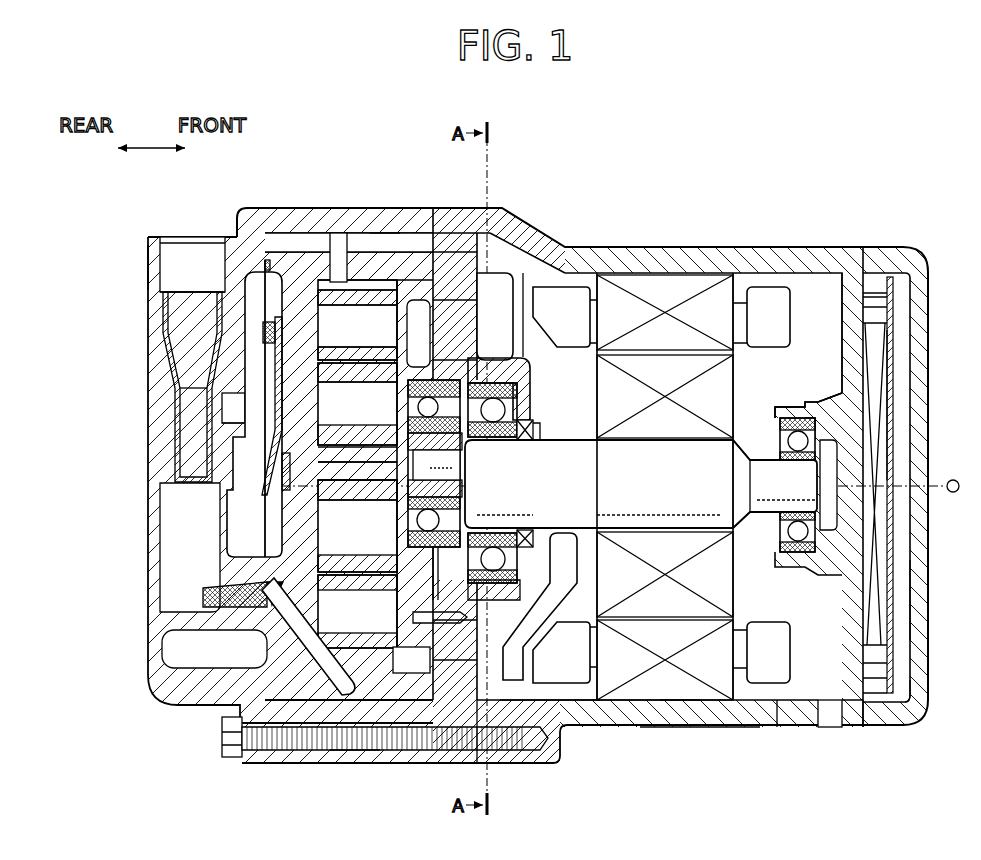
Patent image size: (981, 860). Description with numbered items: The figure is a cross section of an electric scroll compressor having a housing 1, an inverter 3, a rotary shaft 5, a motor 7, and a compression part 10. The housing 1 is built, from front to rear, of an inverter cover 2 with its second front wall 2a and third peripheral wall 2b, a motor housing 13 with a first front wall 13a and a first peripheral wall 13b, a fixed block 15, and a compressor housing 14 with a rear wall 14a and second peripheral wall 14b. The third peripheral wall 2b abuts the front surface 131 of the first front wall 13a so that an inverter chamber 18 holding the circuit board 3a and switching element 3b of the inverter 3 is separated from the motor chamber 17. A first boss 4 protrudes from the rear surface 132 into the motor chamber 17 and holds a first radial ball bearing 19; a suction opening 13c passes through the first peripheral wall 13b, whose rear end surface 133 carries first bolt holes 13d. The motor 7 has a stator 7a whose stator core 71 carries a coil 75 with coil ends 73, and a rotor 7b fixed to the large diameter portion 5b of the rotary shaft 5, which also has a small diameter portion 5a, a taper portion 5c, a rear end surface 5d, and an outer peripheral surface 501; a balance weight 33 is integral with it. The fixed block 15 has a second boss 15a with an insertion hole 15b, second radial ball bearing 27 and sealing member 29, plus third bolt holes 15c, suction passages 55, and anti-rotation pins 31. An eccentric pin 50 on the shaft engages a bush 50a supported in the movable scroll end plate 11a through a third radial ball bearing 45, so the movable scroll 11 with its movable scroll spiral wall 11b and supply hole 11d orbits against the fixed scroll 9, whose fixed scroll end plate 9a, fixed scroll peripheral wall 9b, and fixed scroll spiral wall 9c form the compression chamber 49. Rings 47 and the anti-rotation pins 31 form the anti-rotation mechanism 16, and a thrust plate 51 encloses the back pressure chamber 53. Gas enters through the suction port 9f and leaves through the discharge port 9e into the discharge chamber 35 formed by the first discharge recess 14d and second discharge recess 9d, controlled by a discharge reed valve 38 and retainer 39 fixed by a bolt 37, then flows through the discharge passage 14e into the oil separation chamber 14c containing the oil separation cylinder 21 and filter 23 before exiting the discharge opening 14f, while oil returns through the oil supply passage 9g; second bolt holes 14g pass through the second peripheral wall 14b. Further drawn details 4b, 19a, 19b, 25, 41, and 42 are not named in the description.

The housing 1 is at (272, 205).
The inverter cover 2 is at (931, 641).
The second front wall 2a is at (920, 600).
The third peripheral wall 2b is at (884, 247).
The inverter 3 is at (903, 300).
The circuit board 3a is at (895, 342).
The switching element 3b is at (896, 420).
The first boss 4 is at (788, 610).
The bearing holder portion 4b is at (822, 398).
The rotary shaft 5 is at (603, 438).
The small diameter portion 5a is at (747, 458).
The large diameter portion 5b is at (660, 440).
The taper portion 5c is at (745, 463).
The rear end surface 5d is at (455, 540).
The motor 7 is at (661, 527).
The stator 7a is at (642, 722).
The rotor 7b is at (735, 382).
The fixed scroll 9 is at (305, 250).
The fixed scroll end plate 9a is at (222, 312).
The fixed scroll peripheral wall 9b is at (380, 232).
The fixed scroll spiral wall 9c is at (335, 350).
The second discharge recess 9d is at (253, 275).
The discharge port 9e is at (325, 468).
The suction port 9f is at (338, 260).
The oil supply passage 9g is at (308, 620).
The compression part 10 is at (272, 752).
The movable scroll 11 is at (403, 262).
The movable scroll end plate 11a is at (395, 415).
The movable scroll spiral wall 11b is at (370, 350).
The supply hole 11d is at (338, 475).
The motor housing 13 is at (785, 246).
The first front wall 13a is at (840, 300).
The first peripheral wall 13b is at (710, 728).
The suction opening 13c is at (779, 728).
The first bolt holes 13d is at (520, 745).
The compressor housing 14 is at (146, 630).
The rear wall 14a is at (148, 262).
The second peripheral wall 14b is at (322, 764).
The oil separation chamber 14c is at (178, 513).
The first discharge recess 14d is at (232, 475).
The discharge passage 14e is at (228, 412).
The discharge opening 14f is at (173, 240).
The second bolt holes 14g is at (350, 750).
The fixed block 15 is at (468, 212).
The second boss 15a is at (495, 352).
The insertion hole 15b is at (540, 447).
The third bolt holes 15c is at (470, 735).
The anti-rotation mechanism 16 is at (408, 612).
The motor chamber 17 is at (558, 381).
The inverter chamber 18 is at (907, 690).
The first radial ball bearing 19 is at (781, 486).
The bearing 19a is at (805, 560).
The washer 19b is at (817, 535).
The oil separation cylinder 21 is at (188, 347).
The filter 23 is at (205, 597).
The bolt head 25 is at (222, 738).
The second radial ball bearing 27 is at (525, 383).
The sealing member 29 is at (538, 542).
The anti-rotation pins 31 is at (432, 632).
The balance weight 33 is at (560, 583).
The discharge chamber 35 is at (232, 538).
The bolt 37 is at (276, 332).
The discharge reed valve 38 is at (290, 458).
The retainer 39 is at (282, 430).
The step 41 is at (785, 406).
The retainer 42 is at (815, 440).
The third radial ball bearing 45 is at (448, 360).
The rings 47 is at (422, 728).
The compression chamber 49 is at (352, 539).
The eccentric pin 50 is at (447, 468).
The bush 50a is at (465, 482).
The thrust plate 51 is at (440, 310).
The back pressure chamber 53 is at (498, 375).
The suction passages 55 is at (449, 233).
The stator core 71 is at (665, 705).
The coil ends 73 is at (568, 722).
The coil 75 is at (733, 668).
The front surface 131 is at (864, 728).
The rear surface 132 is at (834, 728).
The rear end surface 133 is at (465, 658).
The outer peripheral surface 501 is at (768, 512).